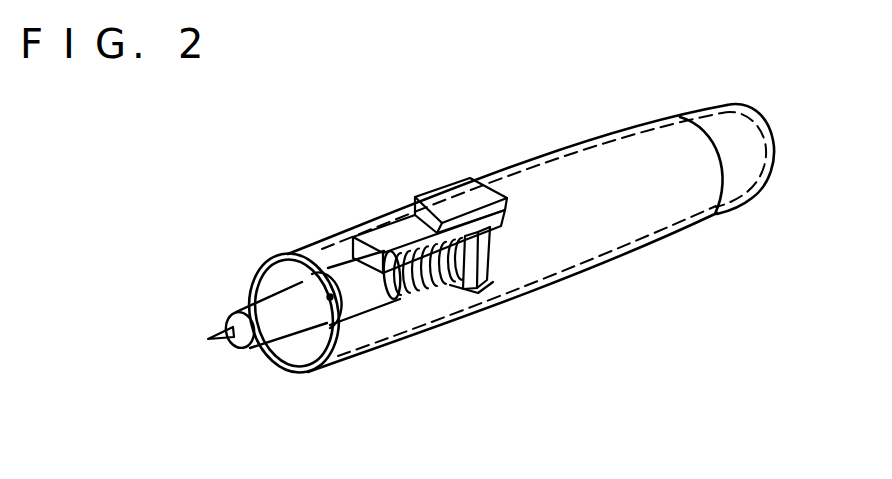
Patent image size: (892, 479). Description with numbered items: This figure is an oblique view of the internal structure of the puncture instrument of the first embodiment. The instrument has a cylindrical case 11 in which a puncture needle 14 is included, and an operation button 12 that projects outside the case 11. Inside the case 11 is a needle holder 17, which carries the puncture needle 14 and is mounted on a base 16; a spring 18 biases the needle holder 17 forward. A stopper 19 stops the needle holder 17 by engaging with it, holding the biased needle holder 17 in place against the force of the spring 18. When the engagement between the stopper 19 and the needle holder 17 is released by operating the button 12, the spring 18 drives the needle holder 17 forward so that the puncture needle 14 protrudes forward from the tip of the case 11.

The case 11 is at (628, 160).
The operation button 12 is at (448, 199).
The puncture needle 14 is at (218, 343).
The base 16 is at (508, 300).
The needle holder 17 is at (352, 297).
The spring 18 is at (437, 288).
The stopper 19 is at (335, 238).